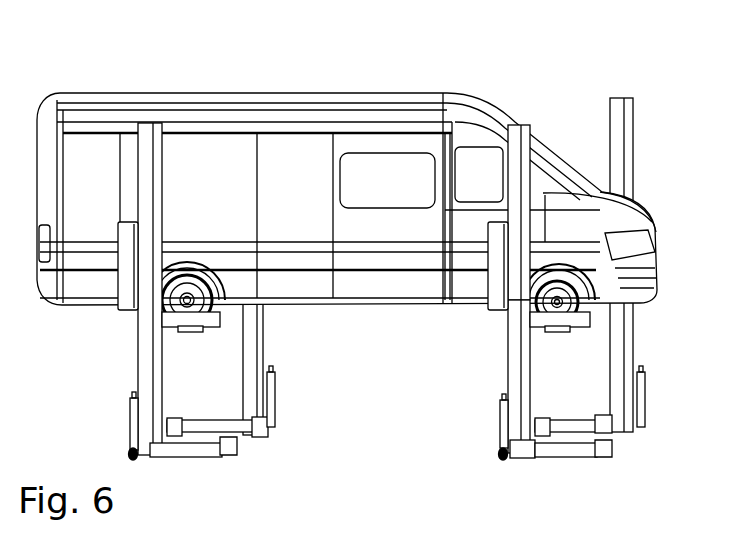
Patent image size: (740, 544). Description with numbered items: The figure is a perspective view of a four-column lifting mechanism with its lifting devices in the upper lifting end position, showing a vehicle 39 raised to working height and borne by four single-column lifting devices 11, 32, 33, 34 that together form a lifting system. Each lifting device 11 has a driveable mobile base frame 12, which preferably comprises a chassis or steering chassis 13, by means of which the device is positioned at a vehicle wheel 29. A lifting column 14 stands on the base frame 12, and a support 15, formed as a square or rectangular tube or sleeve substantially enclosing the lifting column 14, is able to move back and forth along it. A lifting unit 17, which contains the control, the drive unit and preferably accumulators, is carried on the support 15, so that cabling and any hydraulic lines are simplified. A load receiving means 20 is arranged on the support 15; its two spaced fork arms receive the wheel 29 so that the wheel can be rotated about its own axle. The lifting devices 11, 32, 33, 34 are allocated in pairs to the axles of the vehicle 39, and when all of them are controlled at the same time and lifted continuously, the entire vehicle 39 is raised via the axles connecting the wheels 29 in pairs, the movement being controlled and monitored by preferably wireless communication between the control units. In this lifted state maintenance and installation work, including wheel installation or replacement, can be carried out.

The lifting device 11 is at (527, 462).
The mobile base frame 12 is at (576, 452).
The steering chassis 13 is at (492, 458).
The lifting column 14 is at (516, 363).
The support 15 is at (508, 126).
The lifting unit 17 is at (487, 310).
The load receiving means 20 is at (207, 318).
The vehicle wheel 29 is at (186, 332).
The lifting device 32 is at (645, 118).
The lifting device 33 is at (270, 338).
The lifting device 34 is at (128, 352).
The vehicle 39 is at (382, 82).